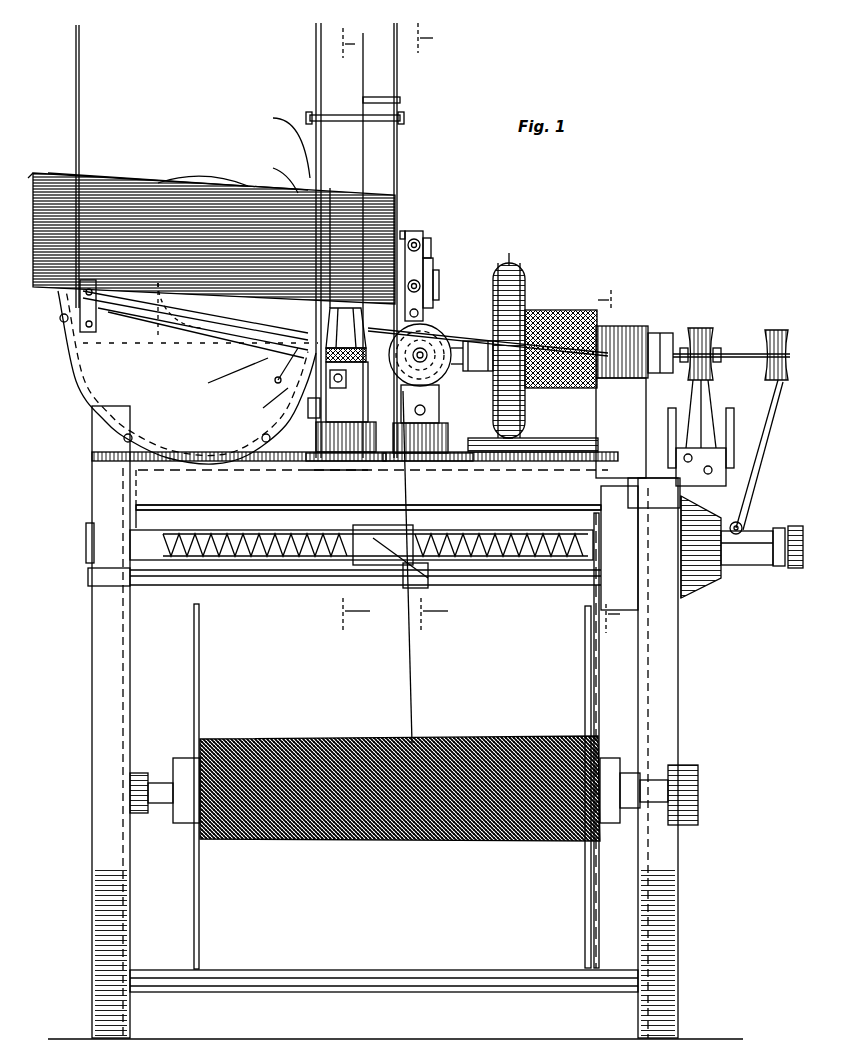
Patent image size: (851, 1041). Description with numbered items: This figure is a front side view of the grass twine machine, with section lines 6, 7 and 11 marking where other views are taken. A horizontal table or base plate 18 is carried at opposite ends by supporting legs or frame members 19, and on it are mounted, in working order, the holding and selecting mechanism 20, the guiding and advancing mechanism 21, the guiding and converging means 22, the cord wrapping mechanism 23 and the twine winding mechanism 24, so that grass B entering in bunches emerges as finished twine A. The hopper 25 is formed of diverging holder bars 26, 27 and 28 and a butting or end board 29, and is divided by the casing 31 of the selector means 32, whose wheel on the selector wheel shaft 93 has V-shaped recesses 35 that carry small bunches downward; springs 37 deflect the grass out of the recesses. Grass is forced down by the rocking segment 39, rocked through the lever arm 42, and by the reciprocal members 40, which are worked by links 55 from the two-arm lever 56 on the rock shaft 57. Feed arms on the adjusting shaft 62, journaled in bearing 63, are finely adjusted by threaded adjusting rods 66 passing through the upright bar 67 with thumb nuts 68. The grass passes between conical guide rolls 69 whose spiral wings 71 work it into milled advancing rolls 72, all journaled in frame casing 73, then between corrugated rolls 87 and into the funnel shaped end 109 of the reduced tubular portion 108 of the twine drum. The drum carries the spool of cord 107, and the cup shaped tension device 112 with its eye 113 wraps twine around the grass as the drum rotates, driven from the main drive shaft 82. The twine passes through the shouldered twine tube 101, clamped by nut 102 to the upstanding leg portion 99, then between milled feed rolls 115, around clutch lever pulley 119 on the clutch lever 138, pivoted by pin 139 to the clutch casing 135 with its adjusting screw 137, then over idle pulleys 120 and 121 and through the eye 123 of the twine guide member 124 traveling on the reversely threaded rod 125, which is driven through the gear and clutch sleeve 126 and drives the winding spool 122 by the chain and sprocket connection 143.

The supporting legs or frame members 19 is at (85, 668).
The casing of selector means 31 is at (178, 172).
The grass B is at (108, 170).
The holder bar 28 is at (95, 178).
The selector means 32 is at (70, 398).
The selector wheel shaft 93 is at (172, 340).
The guiding and advancing mechanism 21 is at (262, 345).
The links 55 is at (228, 378).
The staggered angular recesses 35 is at (279, 374).
The springs (deflecting members) 37 is at (254, 400).
The hopper 25 is at (306, 72).
The holder bars 27 is at (314, 88).
The holder bar 26 is at (356, 36).
The butting or end board 29 is at (390, 134).
The holding and selecting mechanism 20 is at (337, 137).
The reciprocal members 40 is at (278, 174).
The rocking segment 39 is at (324, 200).
The section line 7— 7 is at (354, 333).
The section line 6— 6 is at (430, 331).
The section line 11— 11 is at (611, 462).
The lever arm 42 is at (402, 222).
The thumb nuts 68 is at (410, 232).
The threaded adjusting rods 66 is at (410, 272).
The upright bar 67 is at (424, 250).
The adjusting shaft 62 is at (424, 238).
The bearing 63 is at (430, 262).
The corrugated rolls 87 is at (412, 303).
The guiding and converging means 22 is at (438, 380).
The conical entrance or funnel shaped end 109 is at (440, 365).
The rock shaft 57 is at (432, 403).
The reduced tubular portion 108 is at (468, 333).
The cord wrapping mechanism 23 is at (506, 262).
The peripheral eye 113 is at (503, 250).
The cup shaped twine tension device 112 is at (516, 395).
The main drive shaft 82 is at (555, 430).
The spool of cord 107 is at (540, 302).
The upstanding leg portion 99 is at (636, 320).
The nut 102 is at (655, 326).
The shouldered twine tube 101 is at (694, 320).
The idle pulley 120 is at (712, 338).
The grass twine A is at (746, 362).
The milled feed rolls 115 is at (704, 344).
The clutch lever pulley 119 is at (778, 322).
The clutch lever 138 is at (750, 456).
The pin 139 is at (736, 516).
The twine winding mechanism 24 is at (692, 590).
The clutch casing 135 is at (730, 560).
The adjusting bolt or screw 137 is at (788, 560).
The conical guide rolls 69 is at (355, 326).
The spirally trending flanges or wings 71 is at (364, 336).
The milled advancing rolls 72 is at (346, 411).
The two-arm lever 56 is at (341, 389).
The idle pulley 121 is at (353, 388).
The frame casing 73 is at (356, 455).
The reversely threaded rod (shaft) 125 is at (339, 546).
The twine guide member 124 is at (345, 520).
The table or base plate 18 is at (490, 470).
The gear and clutch sleeve 126 is at (585, 520).
The eye 123 is at (413, 578).
The chain and sprocket wheel connection 143 is at (577, 590).
The winding spool 122 is at (414, 786).